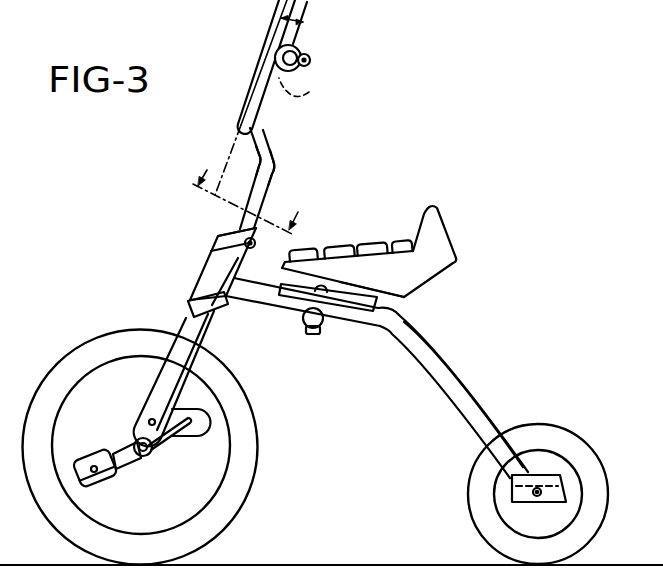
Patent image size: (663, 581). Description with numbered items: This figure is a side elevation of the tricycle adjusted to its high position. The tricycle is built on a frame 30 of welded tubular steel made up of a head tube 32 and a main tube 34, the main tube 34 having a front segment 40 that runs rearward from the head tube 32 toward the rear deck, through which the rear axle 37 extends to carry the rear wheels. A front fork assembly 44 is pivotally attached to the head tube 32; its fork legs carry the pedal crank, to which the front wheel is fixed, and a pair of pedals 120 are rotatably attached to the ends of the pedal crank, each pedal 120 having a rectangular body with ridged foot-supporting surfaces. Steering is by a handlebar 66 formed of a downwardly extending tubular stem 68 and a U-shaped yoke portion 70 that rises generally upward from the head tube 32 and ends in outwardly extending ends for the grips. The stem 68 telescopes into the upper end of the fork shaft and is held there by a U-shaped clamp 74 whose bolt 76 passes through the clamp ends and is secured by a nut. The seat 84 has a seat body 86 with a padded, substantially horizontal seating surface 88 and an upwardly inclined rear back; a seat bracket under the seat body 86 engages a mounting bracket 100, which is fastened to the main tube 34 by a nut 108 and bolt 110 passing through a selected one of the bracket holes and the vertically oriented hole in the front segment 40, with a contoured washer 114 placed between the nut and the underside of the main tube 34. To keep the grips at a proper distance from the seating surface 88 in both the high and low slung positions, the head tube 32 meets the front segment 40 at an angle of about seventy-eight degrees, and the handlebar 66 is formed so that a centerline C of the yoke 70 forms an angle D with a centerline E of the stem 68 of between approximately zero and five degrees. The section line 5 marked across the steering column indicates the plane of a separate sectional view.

The section line 5- 5 is at (252, 190).
The frame 30 is at (441, 332).
The head tube 32 is at (212, 268).
The main tube 34 is at (389, 330).
The rear axle 37 is at (540, 500).
The front segment 40 is at (256, 293).
The front fork assembly 44 is at (178, 320).
The handlebar 66 is at (270, 142).
The stem 68 is at (268, 190).
The yoke portion 70 is at (246, 96).
The U-shaped clamp 74 is at (234, 231).
The bolt 76 is at (258, 244).
The seat 84 is at (463, 230).
The seat body 86 is at (440, 260).
The seating surface 88 is at (348, 248).
The mounting bracket 100 is at (394, 303).
The nut 108 is at (377, 282).
The bolt 110 is at (315, 330).
The contoured washer 114 is at (302, 308).
The pedals 120 is at (98, 444).
The centerline of the yoke C is at (272, 36).
The angle D is at (309, 7).
The centerline of the stem E is at (302, 90).